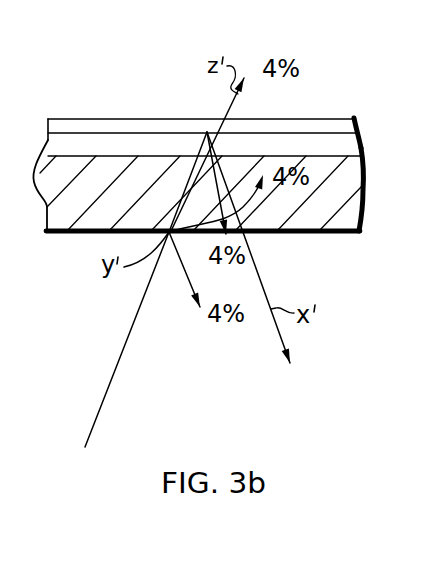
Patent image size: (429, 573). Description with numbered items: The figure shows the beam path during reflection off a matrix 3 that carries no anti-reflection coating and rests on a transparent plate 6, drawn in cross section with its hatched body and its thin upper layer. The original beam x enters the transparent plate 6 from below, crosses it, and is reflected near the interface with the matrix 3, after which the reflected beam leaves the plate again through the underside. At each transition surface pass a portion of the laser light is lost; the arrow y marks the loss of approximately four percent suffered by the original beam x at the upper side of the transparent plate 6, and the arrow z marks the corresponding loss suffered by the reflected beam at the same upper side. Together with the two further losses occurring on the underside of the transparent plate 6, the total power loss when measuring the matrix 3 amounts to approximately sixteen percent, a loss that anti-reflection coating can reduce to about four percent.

The matrix 3 is at (357, 122).
The transparent plate 6 is at (350, 215).
The original beam x is at (133, 330).
The arrow y (loss on original beam) y is at (184, 282).
The arrow z (loss on reflected beam) z is at (254, 203).